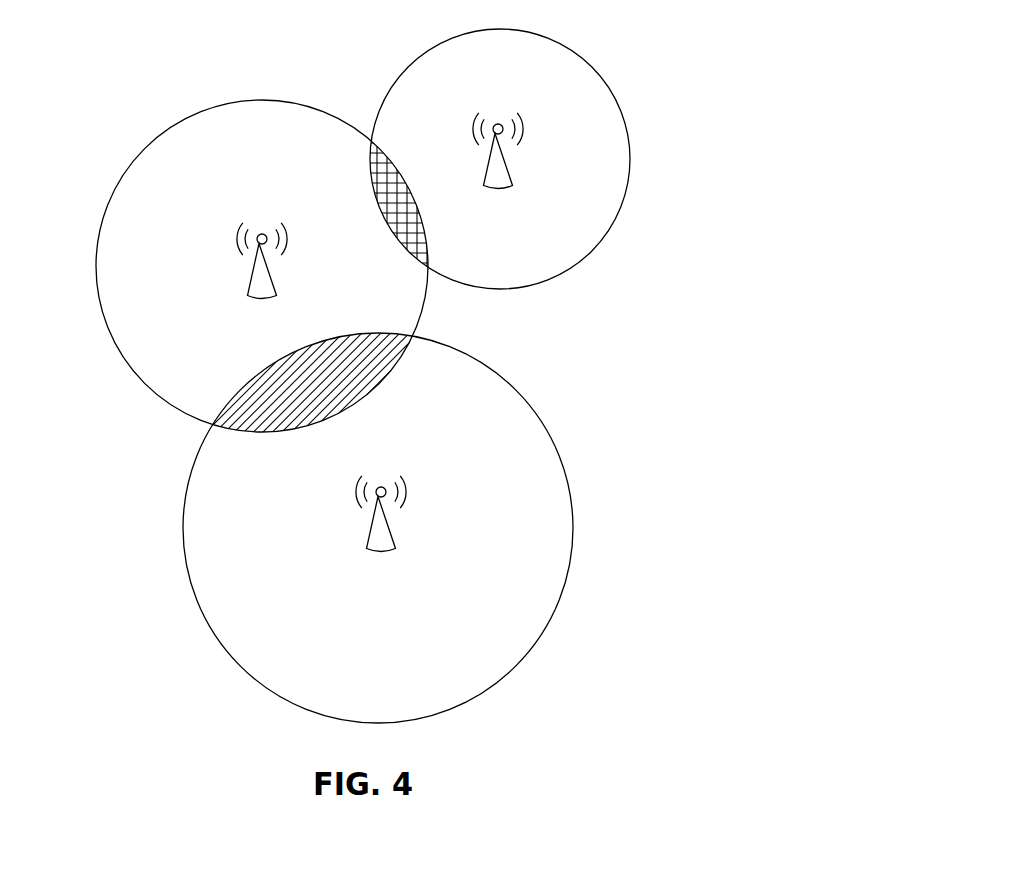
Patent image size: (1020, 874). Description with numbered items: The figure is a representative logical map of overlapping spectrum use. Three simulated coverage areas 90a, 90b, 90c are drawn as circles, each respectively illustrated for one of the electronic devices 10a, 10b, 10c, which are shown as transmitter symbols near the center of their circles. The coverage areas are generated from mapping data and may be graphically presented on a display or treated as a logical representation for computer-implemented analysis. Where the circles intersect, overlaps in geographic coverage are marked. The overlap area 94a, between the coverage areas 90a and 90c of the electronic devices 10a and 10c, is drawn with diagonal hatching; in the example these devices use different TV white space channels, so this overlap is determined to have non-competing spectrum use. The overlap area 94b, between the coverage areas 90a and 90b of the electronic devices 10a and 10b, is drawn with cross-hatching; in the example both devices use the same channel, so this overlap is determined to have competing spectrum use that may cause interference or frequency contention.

The electronic device 10a is at (262, 282).
The electronic device 10b is at (498, 172).
The electronic device 10c is at (381, 535).
The coverage area 90a is at (145, 348).
The coverage area 90b is at (575, 245).
The coverage area 90c is at (547, 502).
The overlap area 94a is at (357, 373).
The overlap area 94b is at (377, 163).